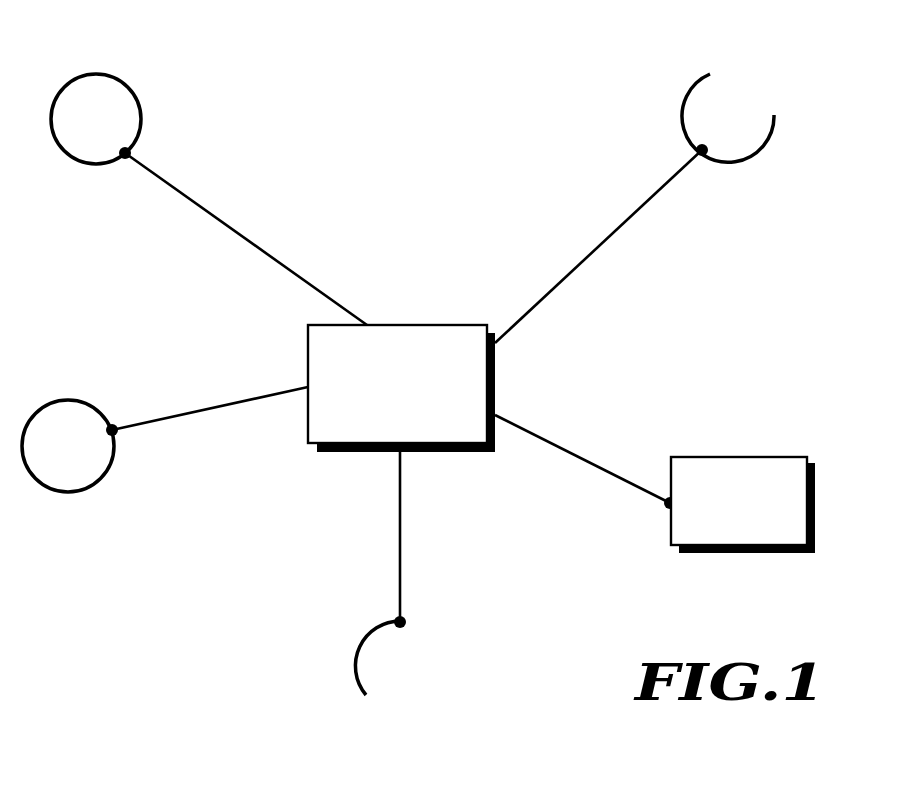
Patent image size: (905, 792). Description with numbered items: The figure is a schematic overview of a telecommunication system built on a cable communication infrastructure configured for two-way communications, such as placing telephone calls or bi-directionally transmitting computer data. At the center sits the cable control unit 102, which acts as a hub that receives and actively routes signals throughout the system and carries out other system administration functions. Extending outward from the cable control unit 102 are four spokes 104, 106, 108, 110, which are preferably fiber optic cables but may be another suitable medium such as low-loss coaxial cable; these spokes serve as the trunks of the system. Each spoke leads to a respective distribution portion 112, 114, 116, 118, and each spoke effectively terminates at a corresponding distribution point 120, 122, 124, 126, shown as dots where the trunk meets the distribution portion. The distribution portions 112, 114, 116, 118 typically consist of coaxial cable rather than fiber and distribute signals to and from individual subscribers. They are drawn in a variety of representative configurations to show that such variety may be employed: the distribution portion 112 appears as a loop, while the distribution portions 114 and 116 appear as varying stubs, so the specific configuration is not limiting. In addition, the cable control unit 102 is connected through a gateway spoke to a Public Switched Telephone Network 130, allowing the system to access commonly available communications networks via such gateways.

The cable control unit 102 is at (402, 323).
The spoke 104 is at (232, 223).
The spoke 106 is at (597, 257).
The spoke 108 is at (400, 515).
The spoke 110 is at (180, 417).
The distribution portion 112 is at (130, 85).
The distribution portion 114 is at (685, 100).
The distribution portion 116 is at (353, 670).
The distribution portion 118 is at (38, 405).
The distribution point 120 is at (133, 146).
The distribution point 122 is at (697, 157).
The distribution point 124 is at (403, 617).
The distribution point 126 is at (105, 418).
The Public Switched Telephone Network (PSTN) 130 is at (698, 455).